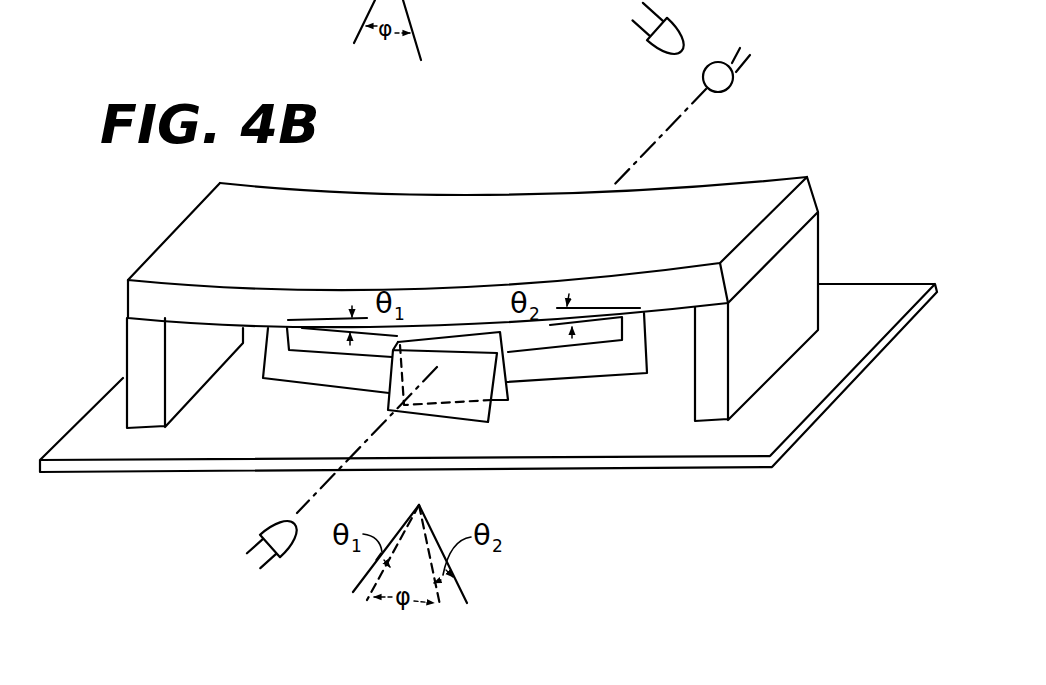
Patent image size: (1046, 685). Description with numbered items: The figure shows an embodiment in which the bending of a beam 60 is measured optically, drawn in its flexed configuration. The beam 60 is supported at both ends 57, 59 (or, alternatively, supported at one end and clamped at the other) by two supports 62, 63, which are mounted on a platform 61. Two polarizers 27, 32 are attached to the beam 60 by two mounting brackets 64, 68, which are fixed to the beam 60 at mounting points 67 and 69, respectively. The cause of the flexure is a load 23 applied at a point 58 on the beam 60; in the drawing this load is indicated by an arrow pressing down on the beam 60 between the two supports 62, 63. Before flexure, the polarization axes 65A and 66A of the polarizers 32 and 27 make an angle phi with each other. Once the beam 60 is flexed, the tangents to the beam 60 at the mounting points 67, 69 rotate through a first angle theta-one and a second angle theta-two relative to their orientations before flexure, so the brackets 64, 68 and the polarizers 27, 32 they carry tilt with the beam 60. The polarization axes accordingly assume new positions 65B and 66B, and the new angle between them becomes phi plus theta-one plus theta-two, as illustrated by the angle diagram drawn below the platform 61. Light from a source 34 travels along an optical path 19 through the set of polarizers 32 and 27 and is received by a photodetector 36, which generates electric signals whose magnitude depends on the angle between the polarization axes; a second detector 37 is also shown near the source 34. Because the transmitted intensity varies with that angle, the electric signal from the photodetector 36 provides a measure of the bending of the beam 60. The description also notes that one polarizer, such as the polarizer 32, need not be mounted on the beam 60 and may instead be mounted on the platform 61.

The optical axis 19 is at (506, 301).
The load 23 is at (473, 217).
The polarizer 27 is at (475, 374).
The polarizer 32 is at (415, 382).
The source 34 is at (744, 71).
The photodetector 36 is at (254, 540).
The photodetector 37 is at (670, 31).
The end of beam 57 is at (755, 240).
The point of load application 58 is at (513, 214).
The end of beam 59 is at (193, 231).
The beam 60 is at (428, 295).
The platform 61 is at (488, 378).
The support 62 is at (185, 373).
The support 63 is at (756, 316).
The mounting bracket 64 is at (330, 360).
The polarization axis 65A is at (353, 325).
The polarization axis 65B is at (349, 557).
The polarization axis 66A is at (440, 324).
The polarization axis 66B is at (478, 563).
The mounting point 67 is at (303, 307).
The mounting bracket 68 is at (577, 347).
The mounting point 69 is at (611, 293).